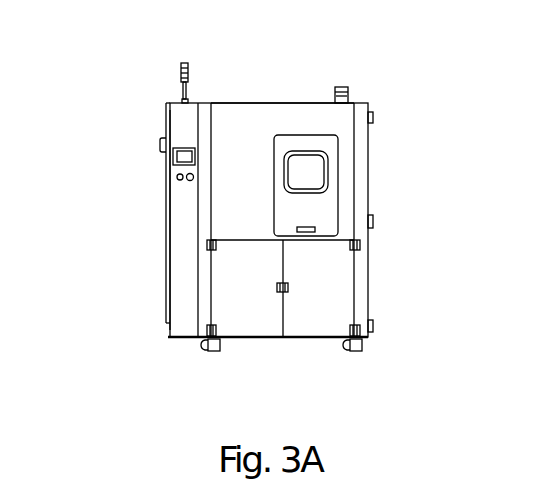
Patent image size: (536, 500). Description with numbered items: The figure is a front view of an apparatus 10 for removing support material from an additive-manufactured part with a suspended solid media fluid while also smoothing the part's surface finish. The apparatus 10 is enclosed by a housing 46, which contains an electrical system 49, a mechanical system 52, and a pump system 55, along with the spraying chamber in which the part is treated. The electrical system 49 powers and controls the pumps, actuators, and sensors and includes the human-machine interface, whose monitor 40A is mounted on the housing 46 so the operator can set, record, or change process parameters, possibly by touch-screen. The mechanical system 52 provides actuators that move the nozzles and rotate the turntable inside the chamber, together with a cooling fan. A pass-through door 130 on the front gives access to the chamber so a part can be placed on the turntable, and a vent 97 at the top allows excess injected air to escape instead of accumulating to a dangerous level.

The apparatus 10 is at (138, 307).
The monitor 40A is at (173, 161).
The housing 46 is at (242, 115).
The electrical system 49 is at (166, 208).
The mechanical system 52 is at (268, 103).
The pump system 55 is at (250, 338).
The vent 97 is at (343, 86).
The pass-through door 130 is at (323, 203).